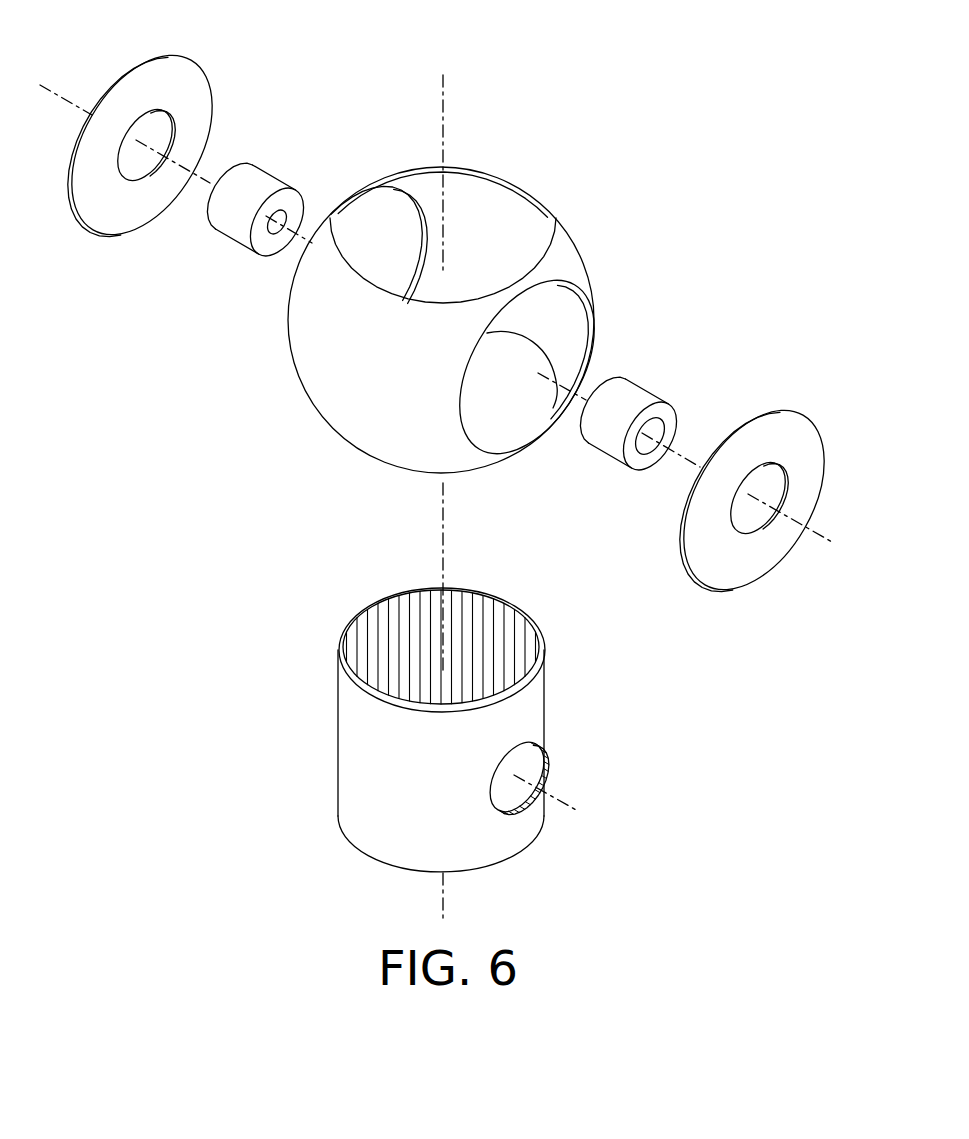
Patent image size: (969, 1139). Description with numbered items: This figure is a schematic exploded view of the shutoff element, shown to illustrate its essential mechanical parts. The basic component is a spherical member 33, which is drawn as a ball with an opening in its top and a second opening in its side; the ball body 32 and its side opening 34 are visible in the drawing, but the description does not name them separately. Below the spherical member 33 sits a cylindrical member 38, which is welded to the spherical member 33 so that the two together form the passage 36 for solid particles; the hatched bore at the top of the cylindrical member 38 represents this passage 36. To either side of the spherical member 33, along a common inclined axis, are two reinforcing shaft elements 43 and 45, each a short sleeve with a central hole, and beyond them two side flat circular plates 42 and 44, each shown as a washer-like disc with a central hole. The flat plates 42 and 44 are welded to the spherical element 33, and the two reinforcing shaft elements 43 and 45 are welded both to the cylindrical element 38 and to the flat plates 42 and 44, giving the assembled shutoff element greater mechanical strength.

The ball 32 is at (325, 388).
The spherical member 33 is at (458, 301).
The flow passage opening 34 is at (587, 263).
The passage 36 is at (410, 623).
The cylindrical member 38 is at (480, 712).
The washer 42 is at (195, 102).
The reinforcing shaft element 43 is at (260, 183).
The washer 44 is at (803, 458).
The reinforcing shaft element 45 is at (635, 398).